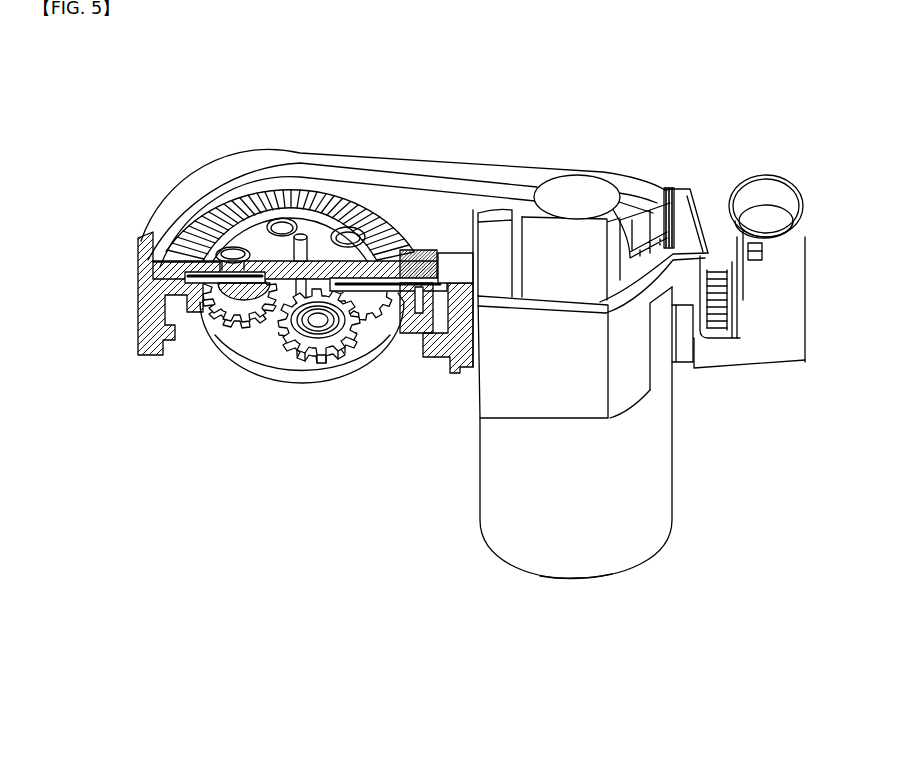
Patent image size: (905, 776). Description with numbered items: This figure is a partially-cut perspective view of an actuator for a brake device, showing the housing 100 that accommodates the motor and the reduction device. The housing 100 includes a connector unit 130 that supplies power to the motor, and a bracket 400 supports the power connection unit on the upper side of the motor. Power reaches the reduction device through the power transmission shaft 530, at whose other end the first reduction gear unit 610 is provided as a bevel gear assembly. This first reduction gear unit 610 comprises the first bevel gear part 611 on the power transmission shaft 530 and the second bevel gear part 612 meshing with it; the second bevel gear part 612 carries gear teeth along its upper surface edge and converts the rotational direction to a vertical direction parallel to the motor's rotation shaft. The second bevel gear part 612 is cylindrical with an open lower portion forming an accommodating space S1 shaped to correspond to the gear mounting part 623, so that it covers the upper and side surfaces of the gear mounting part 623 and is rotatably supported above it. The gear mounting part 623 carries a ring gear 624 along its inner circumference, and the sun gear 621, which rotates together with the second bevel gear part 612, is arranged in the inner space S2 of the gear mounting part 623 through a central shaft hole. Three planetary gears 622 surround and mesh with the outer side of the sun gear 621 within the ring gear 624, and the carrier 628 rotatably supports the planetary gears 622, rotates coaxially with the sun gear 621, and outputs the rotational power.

The housing 100 is at (662, 467).
The connector unit 130 is at (773, 358).
The bracket 400 is at (578, 186).
The power transmission shaft 530 is at (461, 262).
The first reduction gear unit 610 is at (301, 188).
The first bevel gear part 611 is at (409, 258).
The second bevel gear part 612 is at (341, 192).
The sun gear 621 is at (272, 322).
The planetary gears 622 is at (310, 370).
The gear mounting part 623 is at (408, 345).
The ring gear 624 is at (398, 312).
The carrier 628 is at (360, 370).
The accommodating space S1 is at (187, 281).
The inner space S2 is at (200, 304).